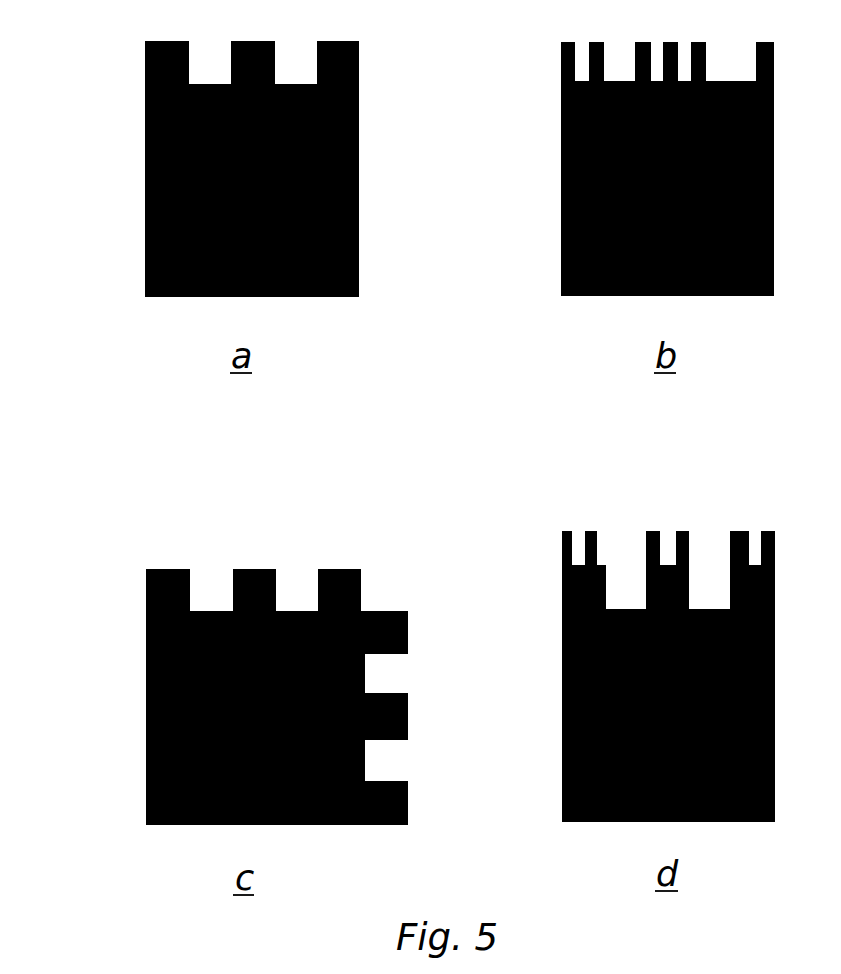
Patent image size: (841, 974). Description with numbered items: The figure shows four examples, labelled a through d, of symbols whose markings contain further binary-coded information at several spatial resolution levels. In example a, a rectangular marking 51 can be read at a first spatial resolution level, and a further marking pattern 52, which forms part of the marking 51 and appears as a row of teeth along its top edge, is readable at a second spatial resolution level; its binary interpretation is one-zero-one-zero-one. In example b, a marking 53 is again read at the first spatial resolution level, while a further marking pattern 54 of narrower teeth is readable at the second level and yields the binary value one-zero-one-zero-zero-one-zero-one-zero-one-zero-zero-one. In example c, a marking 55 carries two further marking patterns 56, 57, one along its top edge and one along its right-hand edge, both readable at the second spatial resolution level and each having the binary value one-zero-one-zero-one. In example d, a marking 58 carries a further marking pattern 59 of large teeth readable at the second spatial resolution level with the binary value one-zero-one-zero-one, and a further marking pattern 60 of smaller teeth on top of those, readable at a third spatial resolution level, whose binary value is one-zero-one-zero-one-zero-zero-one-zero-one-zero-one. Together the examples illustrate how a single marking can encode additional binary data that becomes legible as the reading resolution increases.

The marking 51 is at (351, 282).
The further marking pattern 52 is at (124, 59).
The marking 53 is at (554, 223).
The further marking pattern 54 is at (541, 55).
The marking 55 is at (165, 818).
The further marking pattern 56 is at (128, 580).
The further marking pattern 57 is at (380, 580).
The marking 58 is at (767, 814).
The further marking pattern 59 is at (541, 581).
The further marking pattern 60 is at (541, 540).